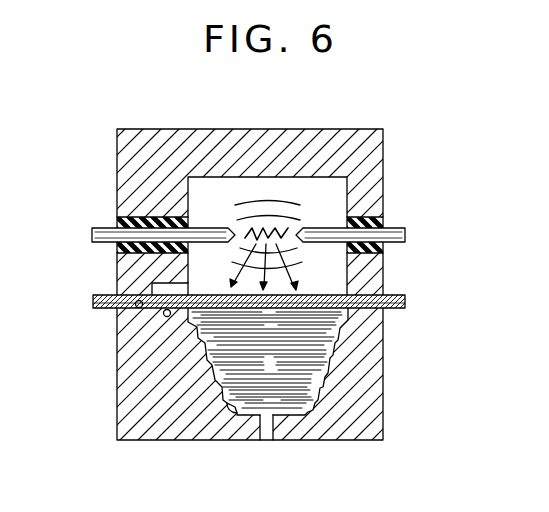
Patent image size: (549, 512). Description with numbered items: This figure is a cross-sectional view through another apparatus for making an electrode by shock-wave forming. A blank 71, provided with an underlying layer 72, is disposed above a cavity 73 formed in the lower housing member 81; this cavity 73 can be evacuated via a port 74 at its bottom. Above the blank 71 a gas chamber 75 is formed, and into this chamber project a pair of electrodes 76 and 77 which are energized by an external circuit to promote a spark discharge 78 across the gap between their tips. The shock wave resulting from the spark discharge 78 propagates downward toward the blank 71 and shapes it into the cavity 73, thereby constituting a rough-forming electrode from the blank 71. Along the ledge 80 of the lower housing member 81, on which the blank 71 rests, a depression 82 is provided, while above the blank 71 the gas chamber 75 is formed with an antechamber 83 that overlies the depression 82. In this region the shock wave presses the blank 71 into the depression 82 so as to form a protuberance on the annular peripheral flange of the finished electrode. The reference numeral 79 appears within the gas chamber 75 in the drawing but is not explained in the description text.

The blank 71 is at (405, 297).
The underlying layer 72 is at (403, 308).
The cavity 73 is at (236, 408).
The port 74 is at (267, 425).
The gas chamber 75 is at (344, 191).
The electrode 76 is at (405, 233).
The electrode 77 is at (100, 233).
The spark discharge 78 is at (270, 228).
The chamber space 79 is at (334, 274).
The ledge 80 is at (139, 306).
The lower housing member 81 is at (375, 398).
The depression 82 is at (165, 316).
The antechamber 83 is at (165, 288).